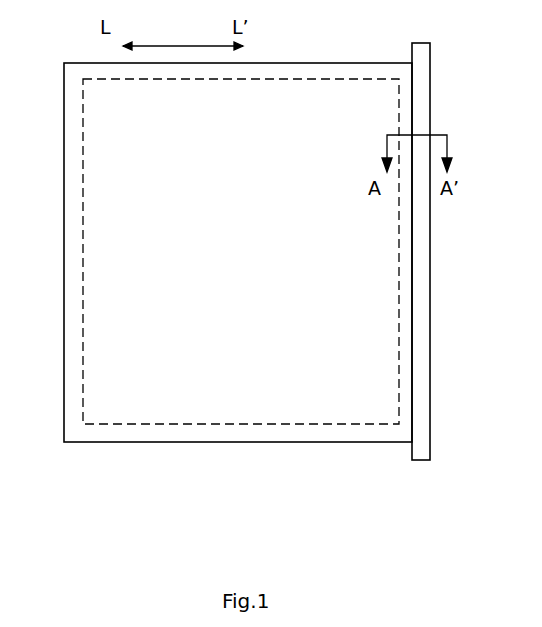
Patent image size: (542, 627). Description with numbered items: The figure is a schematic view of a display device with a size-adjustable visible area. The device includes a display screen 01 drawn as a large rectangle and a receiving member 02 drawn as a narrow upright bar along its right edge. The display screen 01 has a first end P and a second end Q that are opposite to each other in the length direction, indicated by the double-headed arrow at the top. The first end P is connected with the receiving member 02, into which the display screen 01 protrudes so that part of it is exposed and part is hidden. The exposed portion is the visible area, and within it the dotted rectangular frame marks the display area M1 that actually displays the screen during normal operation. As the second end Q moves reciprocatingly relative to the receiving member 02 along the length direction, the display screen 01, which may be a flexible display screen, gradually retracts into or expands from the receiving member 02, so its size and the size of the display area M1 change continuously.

The display screen 01 is at (273, 442).
The receiving member 02 is at (423, 460).
The display area M1 is at (241, 251).
The first end P is at (453, 265).
The second end Q is at (38, 253).